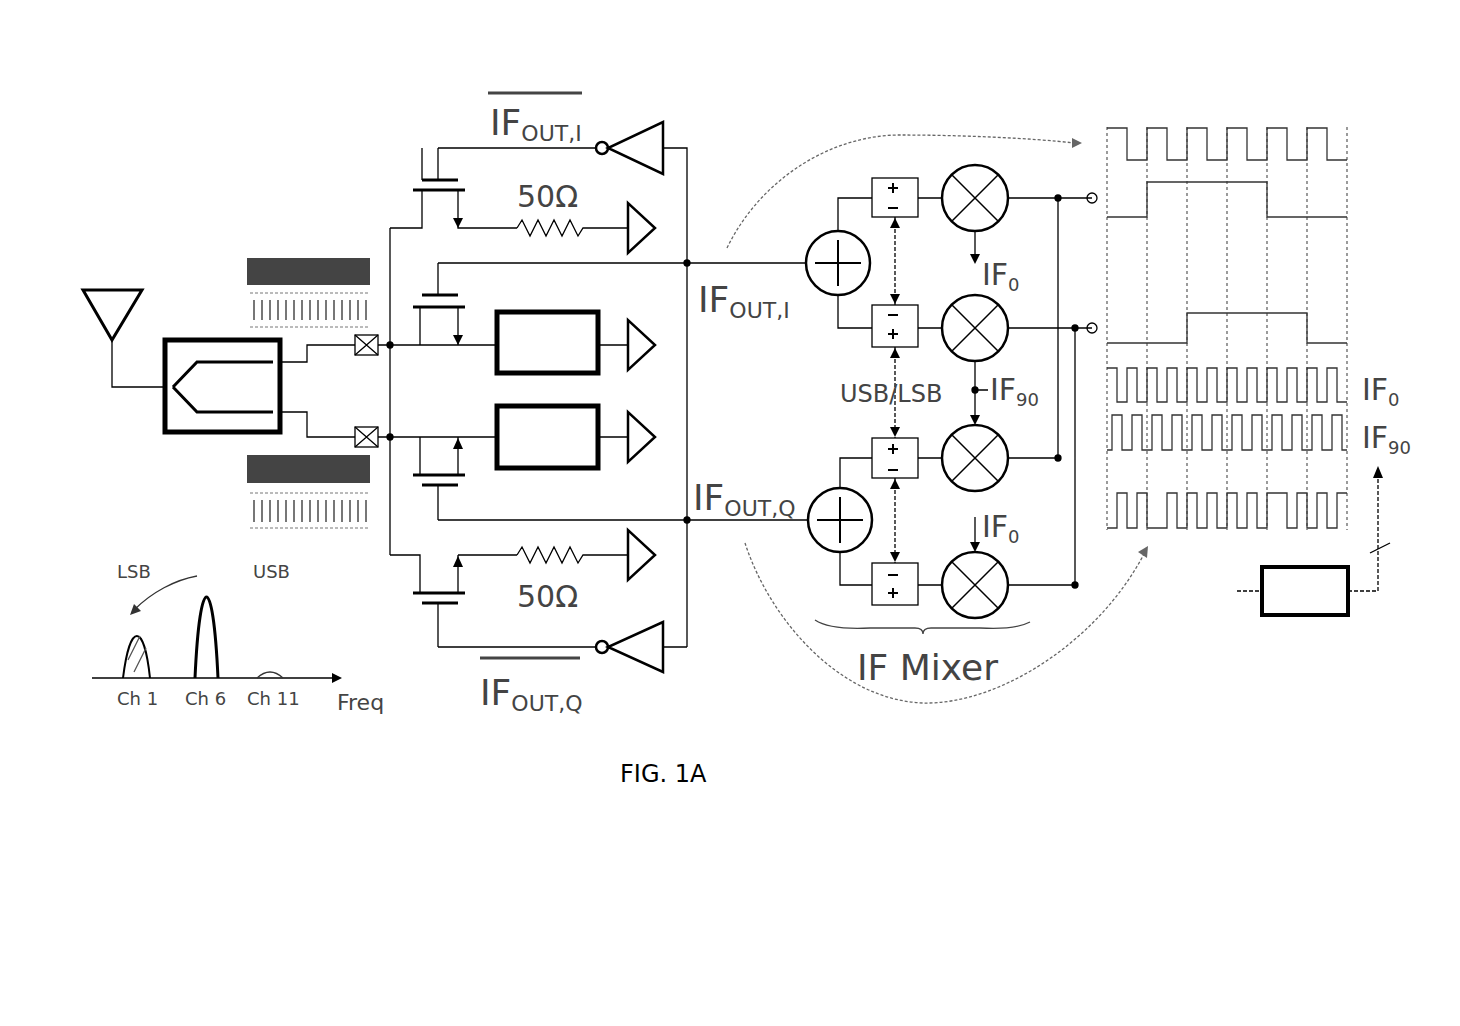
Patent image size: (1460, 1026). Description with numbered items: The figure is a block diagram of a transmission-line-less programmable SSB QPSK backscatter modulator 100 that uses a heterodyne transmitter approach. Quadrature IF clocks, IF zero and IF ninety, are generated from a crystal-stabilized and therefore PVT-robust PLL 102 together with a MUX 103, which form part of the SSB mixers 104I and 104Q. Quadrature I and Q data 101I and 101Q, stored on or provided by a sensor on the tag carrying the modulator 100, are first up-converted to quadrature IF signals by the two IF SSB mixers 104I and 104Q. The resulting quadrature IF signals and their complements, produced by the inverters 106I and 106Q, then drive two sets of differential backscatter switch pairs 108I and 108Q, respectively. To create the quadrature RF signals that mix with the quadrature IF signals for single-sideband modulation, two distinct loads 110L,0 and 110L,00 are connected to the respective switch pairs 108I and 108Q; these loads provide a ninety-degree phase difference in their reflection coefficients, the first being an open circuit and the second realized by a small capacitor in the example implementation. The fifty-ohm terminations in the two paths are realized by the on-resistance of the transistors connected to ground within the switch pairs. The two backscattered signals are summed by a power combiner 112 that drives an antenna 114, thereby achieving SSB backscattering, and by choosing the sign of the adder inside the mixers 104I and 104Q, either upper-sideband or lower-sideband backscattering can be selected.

The transmission-line-less programmable SSB QPSK backscatter modulator 100 is at (193, 145).
The antenna 114 is at (128, 312).
The power combiner 112 is at (224, 432).
The differential backscatter switch pair 108I is at (434, 333).
The differential backscatter switch pair 108Q is at (420, 403).
The load 110L,0 is at (540, 312).
The load 110L,00 is at (523, 468).
The inverter 106I is at (628, 138).
The inverter 106Q is at (647, 662).
The IF SSB mixer 104I is at (808, 313).
The IF SSB mixer 104Q is at (804, 459).
The MUX 103 is at (977, 165).
The I data 101I is at (1408, 242).
The Q data 101Q is at (1360, 302).
The PLL 102 is at (1295, 617).